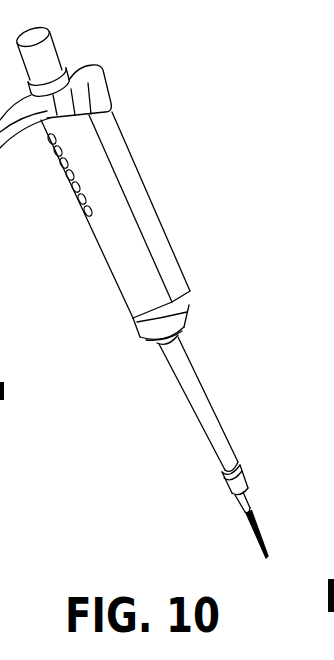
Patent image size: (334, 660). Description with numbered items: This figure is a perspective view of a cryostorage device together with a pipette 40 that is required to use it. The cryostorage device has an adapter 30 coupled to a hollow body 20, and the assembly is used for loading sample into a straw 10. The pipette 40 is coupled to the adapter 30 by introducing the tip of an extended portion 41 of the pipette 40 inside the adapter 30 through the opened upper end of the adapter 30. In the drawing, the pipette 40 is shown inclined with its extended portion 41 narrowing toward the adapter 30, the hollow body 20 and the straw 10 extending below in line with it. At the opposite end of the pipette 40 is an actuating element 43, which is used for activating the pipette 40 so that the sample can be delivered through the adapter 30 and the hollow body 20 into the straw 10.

The straw 10 is at (260, 528).
The hollow body 20 is at (247, 511).
The adapter 30 is at (222, 483).
The pipette 40 is at (147, 203).
The extended portion 41 is at (207, 433).
The actuating element 43 is at (63, 80).